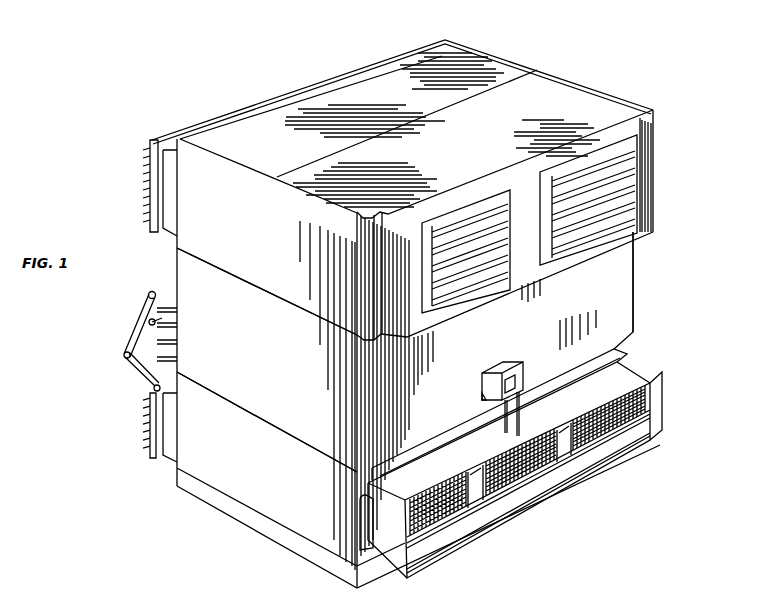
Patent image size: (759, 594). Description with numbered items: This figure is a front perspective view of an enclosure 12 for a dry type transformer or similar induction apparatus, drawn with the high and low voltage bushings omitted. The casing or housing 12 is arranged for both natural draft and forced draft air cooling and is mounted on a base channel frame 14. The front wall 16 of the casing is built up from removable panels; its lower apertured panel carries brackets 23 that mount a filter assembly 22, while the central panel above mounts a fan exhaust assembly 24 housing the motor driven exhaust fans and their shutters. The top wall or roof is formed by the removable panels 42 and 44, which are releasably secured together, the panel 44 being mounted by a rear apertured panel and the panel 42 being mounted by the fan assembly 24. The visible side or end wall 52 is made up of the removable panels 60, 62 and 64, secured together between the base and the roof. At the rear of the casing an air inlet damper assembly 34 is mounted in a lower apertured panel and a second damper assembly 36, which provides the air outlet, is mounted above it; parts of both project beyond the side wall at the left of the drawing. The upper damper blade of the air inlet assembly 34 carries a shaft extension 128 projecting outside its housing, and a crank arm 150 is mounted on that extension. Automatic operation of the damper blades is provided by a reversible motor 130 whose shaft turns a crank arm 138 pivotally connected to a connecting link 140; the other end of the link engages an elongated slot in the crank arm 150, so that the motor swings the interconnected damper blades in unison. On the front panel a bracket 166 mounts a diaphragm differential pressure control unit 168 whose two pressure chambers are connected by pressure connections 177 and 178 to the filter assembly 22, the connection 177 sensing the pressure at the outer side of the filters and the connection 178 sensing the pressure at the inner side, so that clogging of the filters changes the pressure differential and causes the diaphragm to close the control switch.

The enclosure 12 is at (225, 485).
The base channel frame 14 is at (248, 518).
The front wall 16 is at (608, 285).
The filter assembly 22 is at (640, 366).
The brackets 23 is at (546, 380).
The fan exhaust assembly 24 is at (640, 176).
The air inlet damper assembly 34 is at (170, 442).
The second damper assembly 36 is at (170, 228).
The removable roof panel 42 is at (585, 90).
The removable roof panel 44 is at (510, 64).
The side wall 52 is at (205, 295).
The removable panel 60 is at (267, 422).
The removable panel 62 is at (267, 301).
The removable panel 64 is at (646, 456).
The shaft extension 128 is at (160, 400).
The motor 130 is at (170, 330).
The crank arm 138 is at (160, 298).
The connecting link 140 is at (143, 323).
The crank arm 150 is at (142, 372).
The bracket 166 is at (481, 398).
The diaphragm differential pressure control unit 168 is at (514, 358).
The pressure connection 177 is at (521, 416).
The pressure connection 178 is at (503, 428).